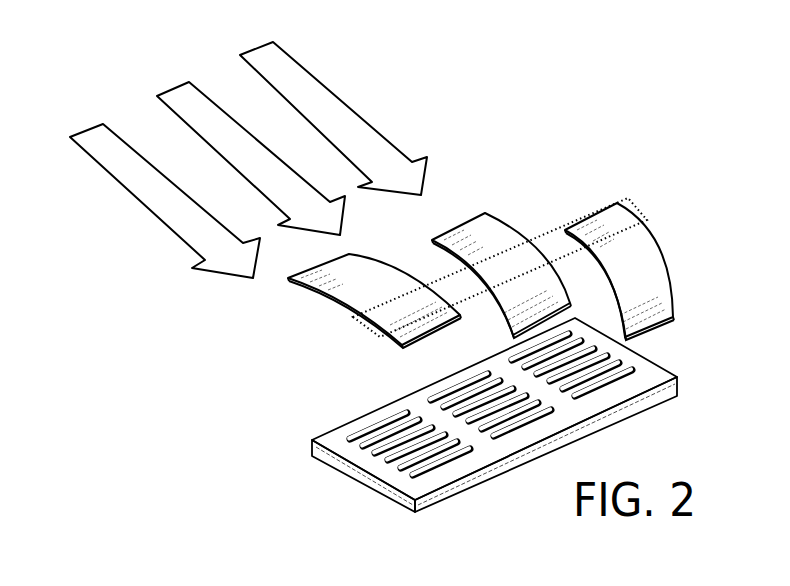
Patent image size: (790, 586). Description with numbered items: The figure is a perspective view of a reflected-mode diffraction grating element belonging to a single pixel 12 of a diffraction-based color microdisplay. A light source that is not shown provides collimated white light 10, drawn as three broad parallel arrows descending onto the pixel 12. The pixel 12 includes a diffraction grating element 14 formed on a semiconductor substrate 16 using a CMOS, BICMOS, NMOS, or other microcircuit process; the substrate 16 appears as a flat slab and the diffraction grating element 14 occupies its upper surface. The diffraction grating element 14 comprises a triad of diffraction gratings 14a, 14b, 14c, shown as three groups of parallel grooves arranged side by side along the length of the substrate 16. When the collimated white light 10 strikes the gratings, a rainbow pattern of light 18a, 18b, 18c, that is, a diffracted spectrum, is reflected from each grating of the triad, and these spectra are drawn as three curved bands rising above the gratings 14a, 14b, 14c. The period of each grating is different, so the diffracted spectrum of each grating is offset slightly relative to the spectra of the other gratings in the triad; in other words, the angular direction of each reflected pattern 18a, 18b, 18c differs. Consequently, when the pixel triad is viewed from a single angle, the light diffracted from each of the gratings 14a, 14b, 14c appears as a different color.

The collimated white light 10 is at (93, 132).
The pixel 12 is at (468, 420).
The diffraction grating element 14 is at (517, 420).
The diffraction grating 14a is at (388, 425).
The diffraction grating 14b is at (448, 398).
The diffraction grating 14c is at (520, 363).
The semiconductor substrate 16 is at (367, 477).
The rainbow pattern of light 18a is at (357, 260).
The rainbow pattern of light 18b is at (492, 223).
The rainbow pattern of light 18c is at (613, 222).